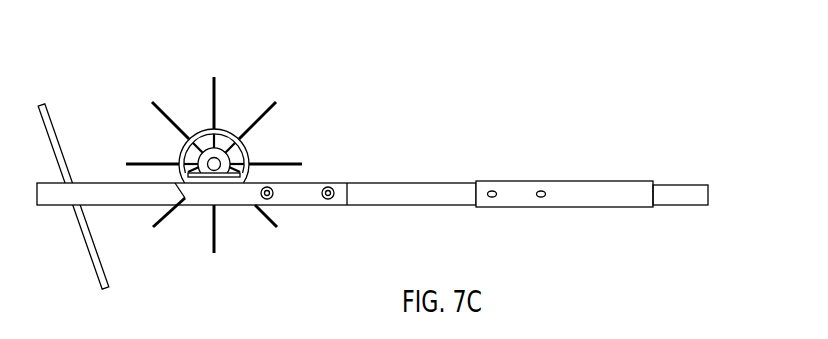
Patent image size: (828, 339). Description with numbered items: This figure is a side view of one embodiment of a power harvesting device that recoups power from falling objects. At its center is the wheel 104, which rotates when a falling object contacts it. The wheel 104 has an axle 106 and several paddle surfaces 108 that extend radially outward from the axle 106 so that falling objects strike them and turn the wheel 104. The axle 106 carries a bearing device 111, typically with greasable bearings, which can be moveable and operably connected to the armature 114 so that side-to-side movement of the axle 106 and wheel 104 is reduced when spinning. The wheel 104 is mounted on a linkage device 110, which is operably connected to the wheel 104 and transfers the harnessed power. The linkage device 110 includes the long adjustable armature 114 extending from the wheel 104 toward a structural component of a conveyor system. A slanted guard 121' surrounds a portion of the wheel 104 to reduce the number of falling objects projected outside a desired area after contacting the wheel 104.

The wheel 104 is at (213, 150).
The axle 106 is at (215, 172).
The paddle surface 108 is at (213, 107).
The linkage device 110 is at (325, 170).
The bearing device 111 is at (237, 132).
The armature 114 is at (396, 182).
The guard 121' is at (73, 182).